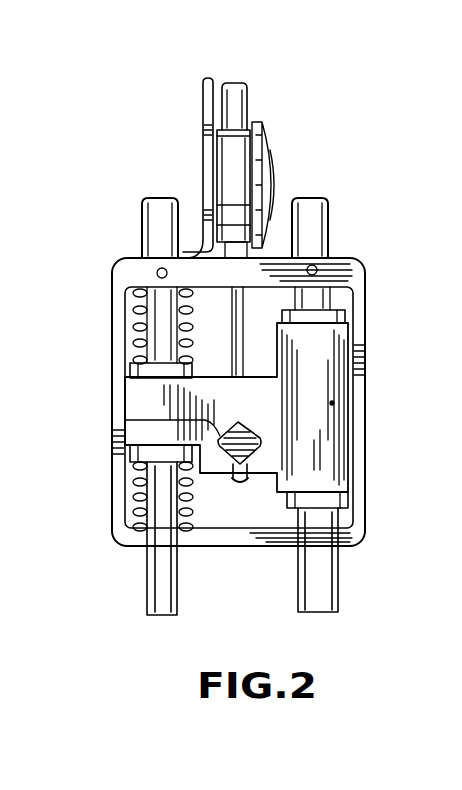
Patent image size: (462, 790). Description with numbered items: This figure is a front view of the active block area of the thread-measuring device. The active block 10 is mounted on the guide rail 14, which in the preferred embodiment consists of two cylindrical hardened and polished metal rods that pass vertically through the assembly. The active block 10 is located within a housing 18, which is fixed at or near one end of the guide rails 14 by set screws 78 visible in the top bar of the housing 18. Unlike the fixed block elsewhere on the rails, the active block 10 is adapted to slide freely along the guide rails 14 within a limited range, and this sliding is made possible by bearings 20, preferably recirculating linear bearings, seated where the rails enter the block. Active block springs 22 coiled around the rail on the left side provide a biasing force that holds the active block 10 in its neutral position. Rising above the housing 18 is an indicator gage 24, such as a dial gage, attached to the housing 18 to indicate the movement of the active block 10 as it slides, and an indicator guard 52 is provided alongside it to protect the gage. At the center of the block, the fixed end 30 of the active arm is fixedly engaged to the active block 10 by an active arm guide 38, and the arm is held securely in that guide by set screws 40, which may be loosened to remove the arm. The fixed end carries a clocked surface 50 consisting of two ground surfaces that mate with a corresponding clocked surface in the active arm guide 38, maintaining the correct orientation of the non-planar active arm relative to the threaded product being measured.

The active block 10 is at (332, 403).
The guide rail 14 is at (160, 578).
The housing 18 is at (364, 272).
The bearings 20 is at (132, 368).
The active block springs 22 is at (135, 330).
The indicator gage 24 is at (267, 162).
The fixed end 30 is at (250, 468).
The active arm guide 38 is at (125, 420).
The set screws 40 is at (240, 485).
The clocked surface 50 is at (262, 442).
The indicator guard 52 is at (205, 112).
The set screws 78 is at (158, 268).